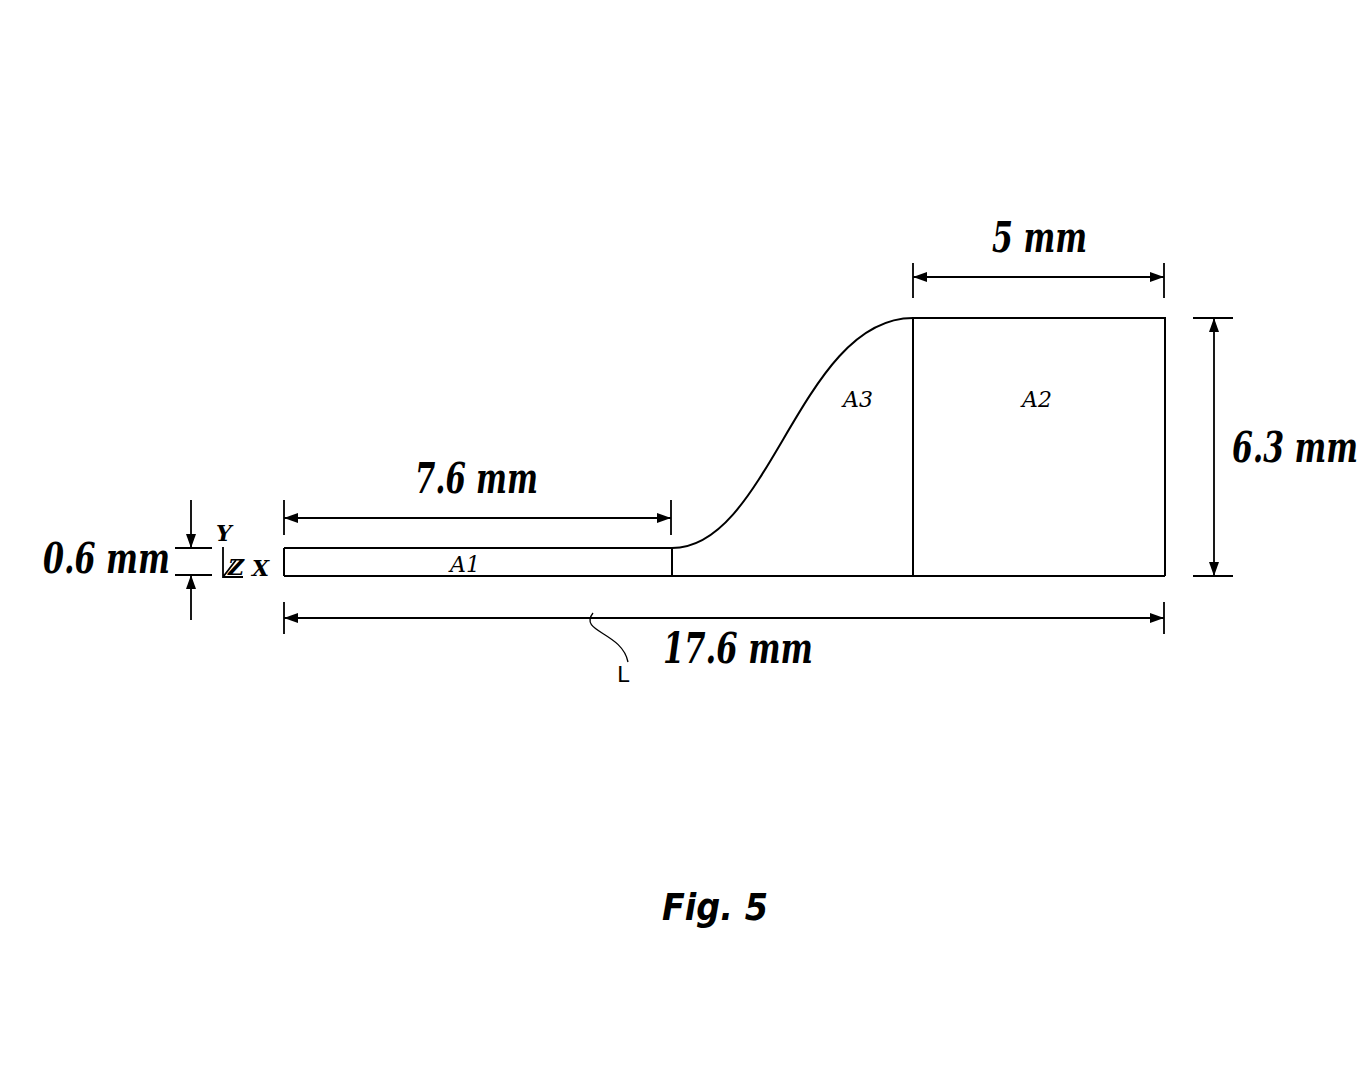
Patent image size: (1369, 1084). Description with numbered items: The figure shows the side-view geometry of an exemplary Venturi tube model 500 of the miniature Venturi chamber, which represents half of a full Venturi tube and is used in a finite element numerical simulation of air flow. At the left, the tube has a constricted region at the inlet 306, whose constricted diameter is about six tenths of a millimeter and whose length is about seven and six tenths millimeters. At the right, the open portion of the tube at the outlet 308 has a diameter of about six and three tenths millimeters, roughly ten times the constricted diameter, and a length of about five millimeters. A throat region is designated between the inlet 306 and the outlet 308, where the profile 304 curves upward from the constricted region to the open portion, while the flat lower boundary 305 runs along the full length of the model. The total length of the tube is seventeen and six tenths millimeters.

The Venturi tube model 500 is at (763, 374).
The curved transition portion 304 is at (828, 357).
The bottom surface 305 is at (855, 576).
The inlet 306 is at (360, 547).
The outlet 308 is at (1158, 337).